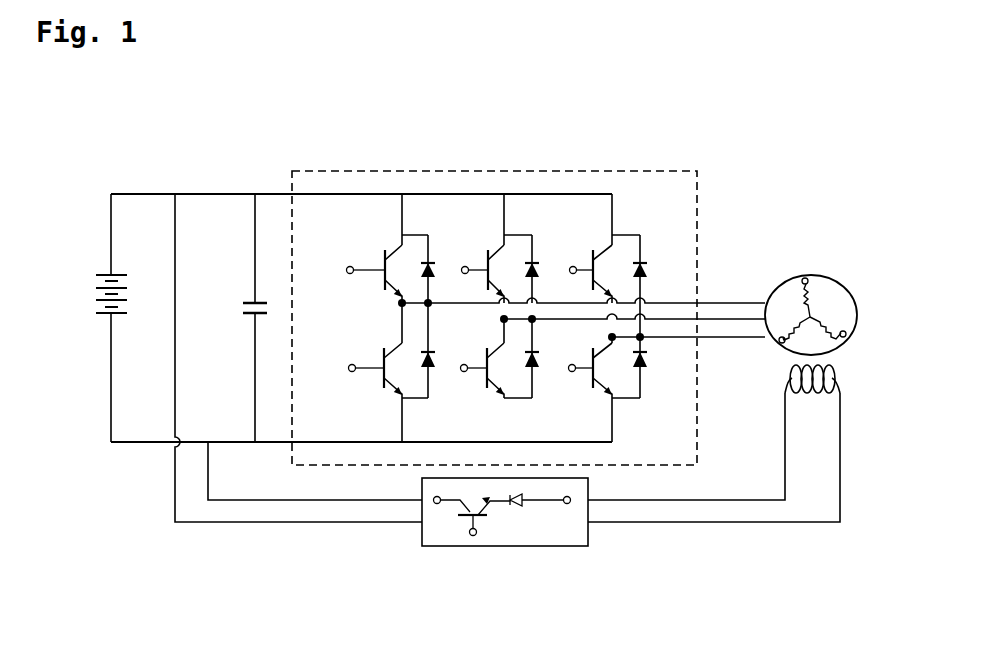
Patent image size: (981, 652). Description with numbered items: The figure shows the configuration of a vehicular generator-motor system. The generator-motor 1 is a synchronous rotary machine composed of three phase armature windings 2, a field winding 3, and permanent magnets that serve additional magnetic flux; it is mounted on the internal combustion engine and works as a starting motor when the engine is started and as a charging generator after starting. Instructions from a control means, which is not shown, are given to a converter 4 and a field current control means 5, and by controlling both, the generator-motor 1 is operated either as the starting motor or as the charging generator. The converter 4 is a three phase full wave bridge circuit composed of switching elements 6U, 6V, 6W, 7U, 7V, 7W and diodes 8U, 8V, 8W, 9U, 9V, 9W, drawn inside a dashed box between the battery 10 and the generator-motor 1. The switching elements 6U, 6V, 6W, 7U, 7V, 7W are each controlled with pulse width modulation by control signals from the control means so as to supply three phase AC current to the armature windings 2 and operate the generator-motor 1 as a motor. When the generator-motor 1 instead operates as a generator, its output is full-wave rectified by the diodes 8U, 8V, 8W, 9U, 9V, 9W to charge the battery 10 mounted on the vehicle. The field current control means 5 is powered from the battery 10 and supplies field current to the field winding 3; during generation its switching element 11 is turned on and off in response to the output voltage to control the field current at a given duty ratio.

The generator-motor 1 is at (784, 287).
The three phase armature windings 2 is at (812, 287).
The field winding 3 is at (836, 362).
The converter 4 is at (562, 170).
The field current control means 5 is at (548, 546).
The switching element 6U is at (385, 259).
The switching element 6V is at (488, 259).
The switching element 6W is at (593, 259).
The switching element 7U is at (382, 389).
The switching element 7V is at (487, 389).
The switching element 7W is at (593, 389).
The diode 8U is at (436, 278).
The diode 8V is at (540, 278).
The diode 8W is at (647, 270).
The diode 9U is at (440, 345).
The diode 9V is at (545, 350).
The diode 9W is at (649, 372).
The battery 10 is at (85, 315).
The switching element 11 is at (462, 530).